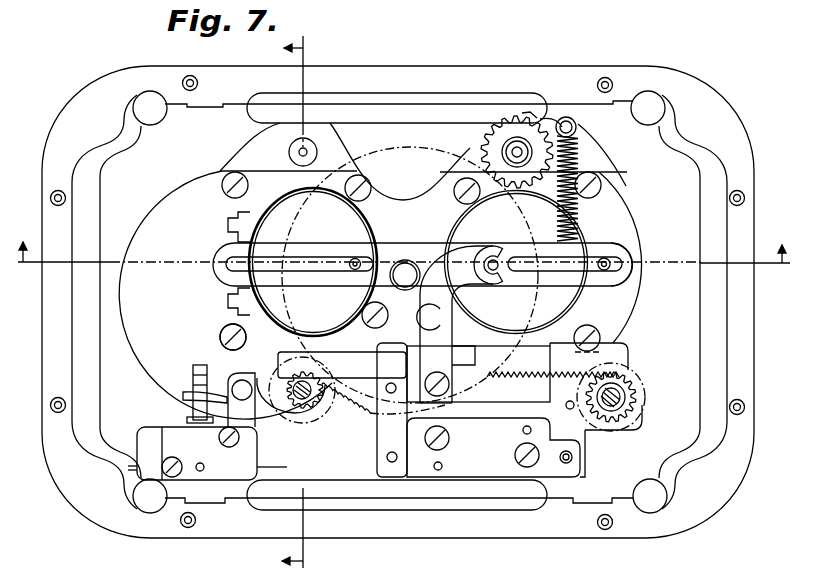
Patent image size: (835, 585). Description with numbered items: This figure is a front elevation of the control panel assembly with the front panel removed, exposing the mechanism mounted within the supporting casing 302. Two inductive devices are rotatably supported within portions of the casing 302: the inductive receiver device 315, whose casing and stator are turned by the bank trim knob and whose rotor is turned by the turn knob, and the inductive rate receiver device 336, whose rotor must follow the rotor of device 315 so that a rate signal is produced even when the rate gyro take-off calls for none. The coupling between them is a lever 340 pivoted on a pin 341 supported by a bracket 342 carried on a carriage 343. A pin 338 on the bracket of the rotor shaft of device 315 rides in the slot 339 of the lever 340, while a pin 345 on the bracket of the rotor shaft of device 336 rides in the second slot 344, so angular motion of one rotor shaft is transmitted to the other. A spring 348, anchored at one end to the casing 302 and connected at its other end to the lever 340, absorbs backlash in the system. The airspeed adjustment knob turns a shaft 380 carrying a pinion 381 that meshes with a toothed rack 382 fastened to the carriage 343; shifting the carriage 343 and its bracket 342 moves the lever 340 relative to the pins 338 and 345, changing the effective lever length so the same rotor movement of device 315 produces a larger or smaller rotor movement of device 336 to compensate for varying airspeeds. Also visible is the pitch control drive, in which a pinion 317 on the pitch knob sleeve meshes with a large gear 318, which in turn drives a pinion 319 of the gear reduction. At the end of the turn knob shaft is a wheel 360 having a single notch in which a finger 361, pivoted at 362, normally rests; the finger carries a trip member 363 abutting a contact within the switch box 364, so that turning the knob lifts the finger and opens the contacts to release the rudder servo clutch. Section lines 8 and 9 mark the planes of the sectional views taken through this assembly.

The supporting casing 302 is at (72, 318).
The inductive receiver device 315 is at (354, 312).
The pinion 317 is at (346, 407).
The large gear 318 is at (462, 150).
The pinion 319 is at (529, 113).
The inductive rate receiver device 336 is at (430, 305).
The pin 338 is at (355, 258).
The slot 339 is at (232, 262).
The lever 340 is at (620, 250).
The pin 341 is at (497, 235).
The bracket 342 is at (456, 306).
The carriage 343 is at (447, 378).
The second slot 344 is at (570, 268).
The pin 345 is at (609, 266).
The spring 348 is at (577, 212).
The wheel 360 is at (294, 416).
The finger 361 is at (262, 342).
The pivot 362 is at (238, 380).
The trip member 363 is at (193, 401).
The switch box 364 is at (247, 469).
The shaft 380 is at (625, 393).
The pinion 381 is at (633, 407).
The toothed rack 382 is at (540, 374).
The section line 8- 8 is at (403, 239).
The section line 9- 9 is at (302, 303).